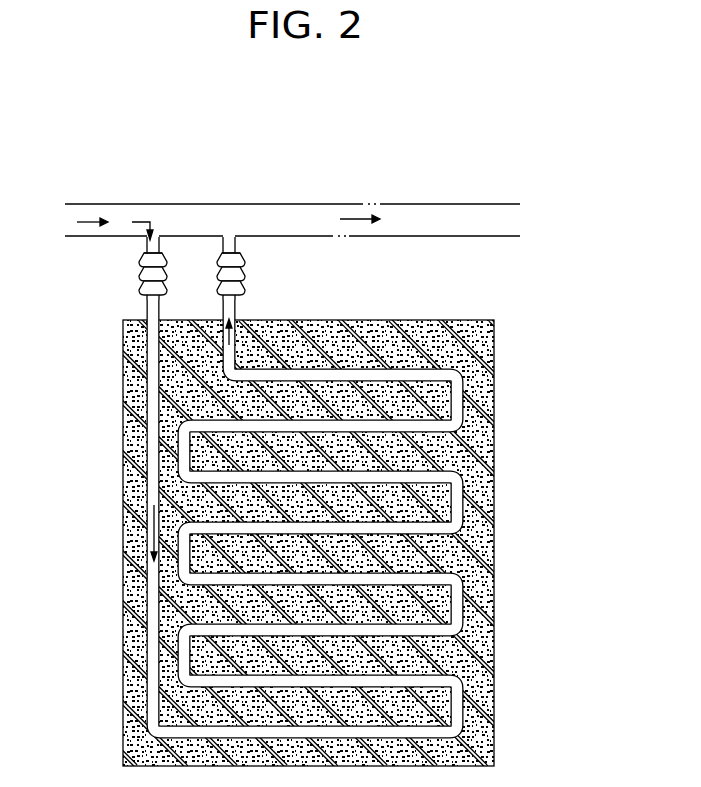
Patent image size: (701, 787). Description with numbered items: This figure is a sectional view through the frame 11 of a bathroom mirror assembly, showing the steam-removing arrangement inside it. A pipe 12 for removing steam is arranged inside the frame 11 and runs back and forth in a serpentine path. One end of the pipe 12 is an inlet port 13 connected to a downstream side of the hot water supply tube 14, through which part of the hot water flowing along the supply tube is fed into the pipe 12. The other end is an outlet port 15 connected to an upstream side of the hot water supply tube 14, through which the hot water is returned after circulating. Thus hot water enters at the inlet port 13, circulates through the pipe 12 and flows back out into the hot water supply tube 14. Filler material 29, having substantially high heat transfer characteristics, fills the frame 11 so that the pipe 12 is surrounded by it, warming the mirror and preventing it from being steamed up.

The frame 11 is at (439, 310).
The pipe 12 is at (462, 400).
The inlet port 13 is at (138, 262).
The hot water supply tube 14 is at (485, 208).
The outlet port 15 is at (245, 250).
The filler material 29 is at (493, 630).